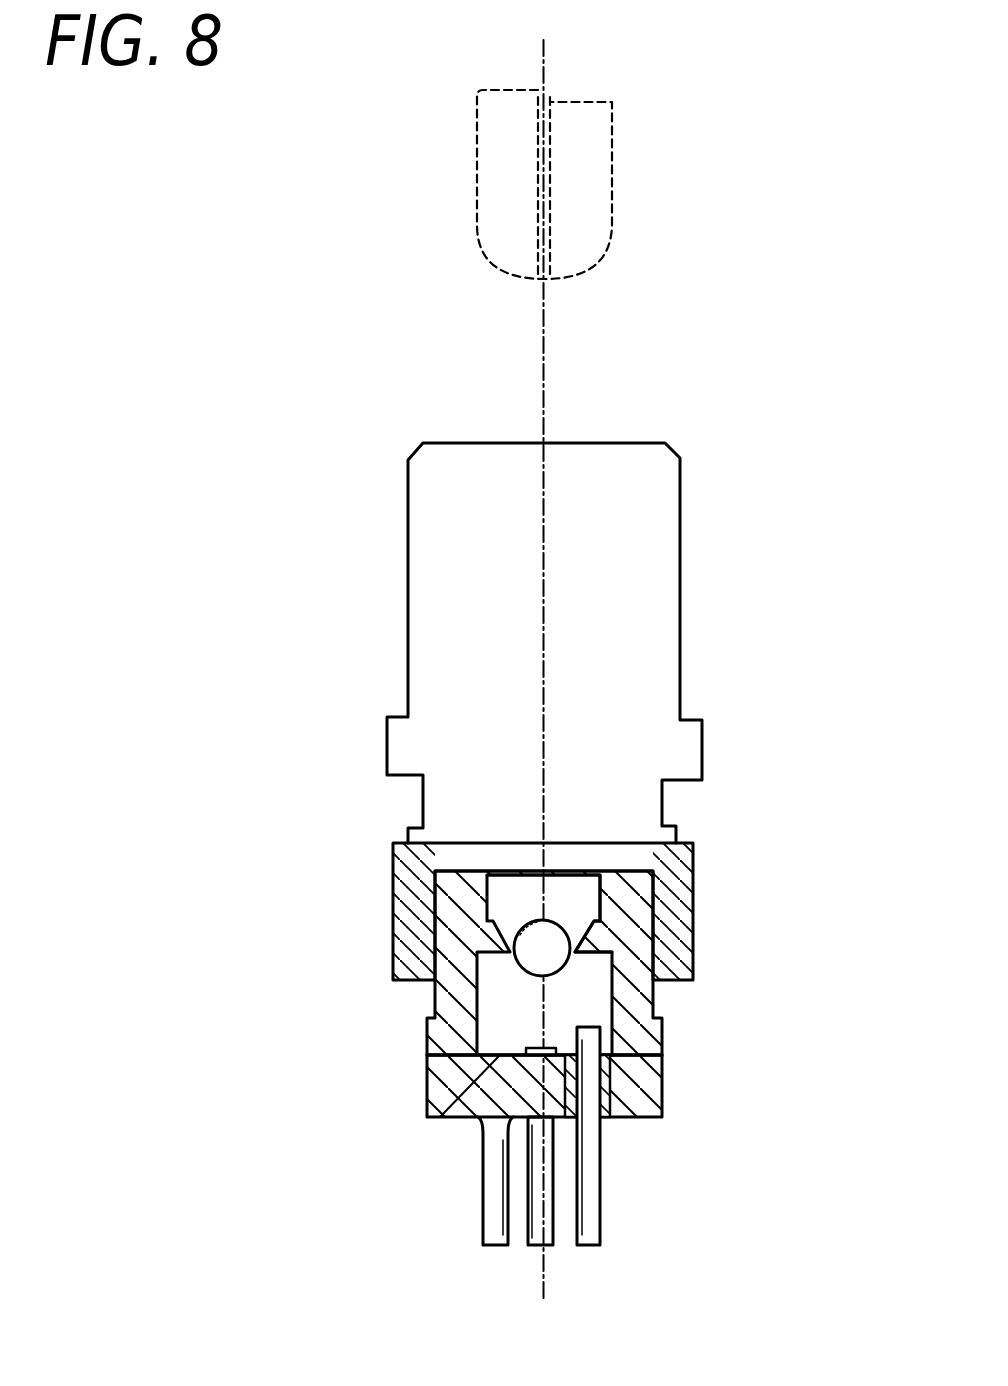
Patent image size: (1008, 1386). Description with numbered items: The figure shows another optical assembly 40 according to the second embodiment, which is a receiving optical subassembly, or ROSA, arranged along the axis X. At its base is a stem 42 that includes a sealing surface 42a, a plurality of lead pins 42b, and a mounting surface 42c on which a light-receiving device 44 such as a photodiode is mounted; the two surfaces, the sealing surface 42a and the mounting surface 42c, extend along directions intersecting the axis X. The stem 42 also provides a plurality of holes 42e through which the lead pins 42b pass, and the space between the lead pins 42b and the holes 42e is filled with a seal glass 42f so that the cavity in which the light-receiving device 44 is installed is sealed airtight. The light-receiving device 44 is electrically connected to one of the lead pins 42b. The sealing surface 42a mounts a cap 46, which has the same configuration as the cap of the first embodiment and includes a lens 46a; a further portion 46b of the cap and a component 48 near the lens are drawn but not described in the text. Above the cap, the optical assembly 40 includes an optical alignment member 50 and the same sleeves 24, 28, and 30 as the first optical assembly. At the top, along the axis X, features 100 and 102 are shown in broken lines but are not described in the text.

The axis X is at (547, 83).
The optical fiber 100 is at (552, 195).
The ferrule 102 is at (593, 223).
The optical assembly 40 is at (783, 427).
The sleeve 24 is at (625, 643).
The sleeve 28 is at (625, 643).
The sleeve 30 is at (648, 582).
The optical alignment member 50 is at (697, 867).
The cap 46 is at (609, 963).
The lens 46a is at (507, 927).
The holder lens seat 46b is at (575, 965).
The ball lens 48 is at (512, 928).
The light-receiving device 44 is at (537, 1048).
The stem 42 is at (598, 1111).
The sealing surface 42a is at (663, 1070).
The seal glass 42f is at (650, 1118).
The holes 42e is at (602, 1128).
The mounting surface 42c is at (430, 1118).
The lead pins 42b is at (608, 1248).